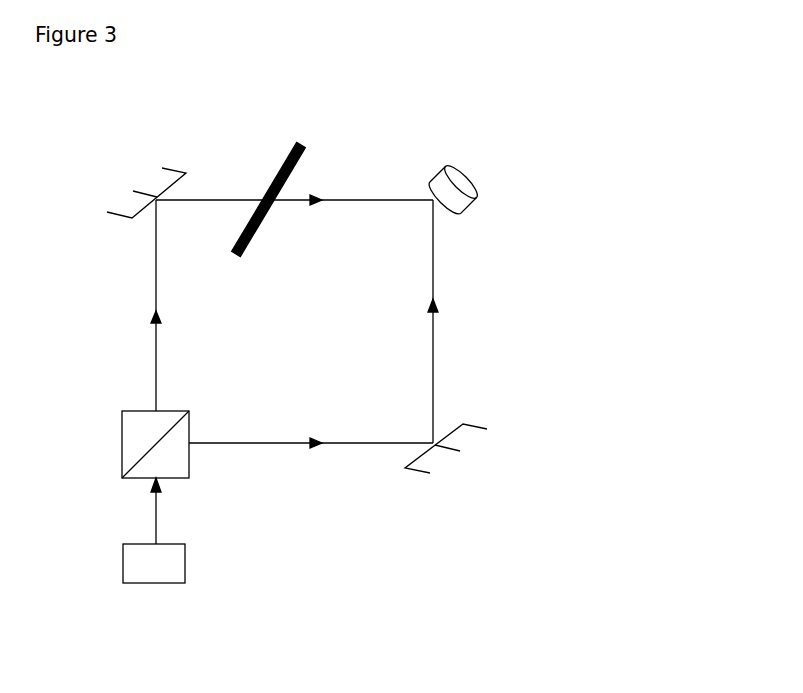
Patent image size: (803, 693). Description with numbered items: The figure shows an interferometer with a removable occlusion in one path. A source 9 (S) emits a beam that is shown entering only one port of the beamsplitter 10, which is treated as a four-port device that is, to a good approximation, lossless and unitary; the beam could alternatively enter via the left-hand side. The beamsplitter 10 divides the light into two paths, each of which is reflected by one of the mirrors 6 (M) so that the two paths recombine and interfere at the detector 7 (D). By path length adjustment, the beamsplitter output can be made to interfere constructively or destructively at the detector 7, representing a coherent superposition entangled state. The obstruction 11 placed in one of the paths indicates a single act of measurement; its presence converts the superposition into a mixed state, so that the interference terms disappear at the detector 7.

The mirrors 6 is at (294, 341).
The detector 7 is at (471, 184).
The source 9 is at (154, 554).
The beamsplitter 10 is at (129, 444).
The obstruction 11 is at (278, 177).